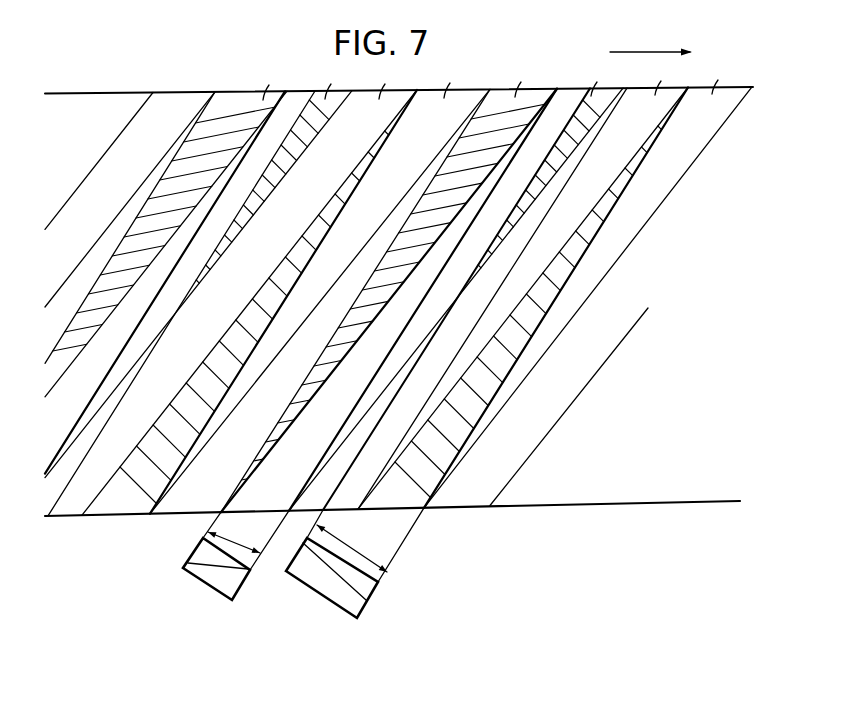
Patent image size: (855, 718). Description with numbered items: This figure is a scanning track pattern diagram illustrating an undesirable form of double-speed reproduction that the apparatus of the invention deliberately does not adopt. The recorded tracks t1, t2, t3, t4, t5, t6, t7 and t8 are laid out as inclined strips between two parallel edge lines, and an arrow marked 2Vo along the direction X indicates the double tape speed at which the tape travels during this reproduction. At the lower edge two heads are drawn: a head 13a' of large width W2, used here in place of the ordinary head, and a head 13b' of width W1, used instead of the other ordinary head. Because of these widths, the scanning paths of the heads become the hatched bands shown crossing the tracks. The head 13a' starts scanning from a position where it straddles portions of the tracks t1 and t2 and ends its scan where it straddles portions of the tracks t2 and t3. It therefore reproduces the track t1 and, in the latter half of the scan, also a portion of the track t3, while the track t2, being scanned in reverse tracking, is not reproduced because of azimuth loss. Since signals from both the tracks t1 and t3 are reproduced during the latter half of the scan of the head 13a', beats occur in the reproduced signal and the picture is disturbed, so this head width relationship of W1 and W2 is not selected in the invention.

The head of large width 13a' is at (368, 566).
The head 13b' is at (242, 568).
The head width W1 is at (236, 537).
The large head width W2 is at (352, 548).
The track t1 is at (725, 76).
The track t2 is at (650, 77).
The track t3 is at (587, 77).
The track t4 is at (515, 78).
The track t5 is at (453, 79).
The track t6 is at (383, 79).
The track t7 is at (322, 80).
The track t8 is at (255, 81).
The double tape speed 2Vo is at (651, 42).
The tape travel direction X is at (699, 42).